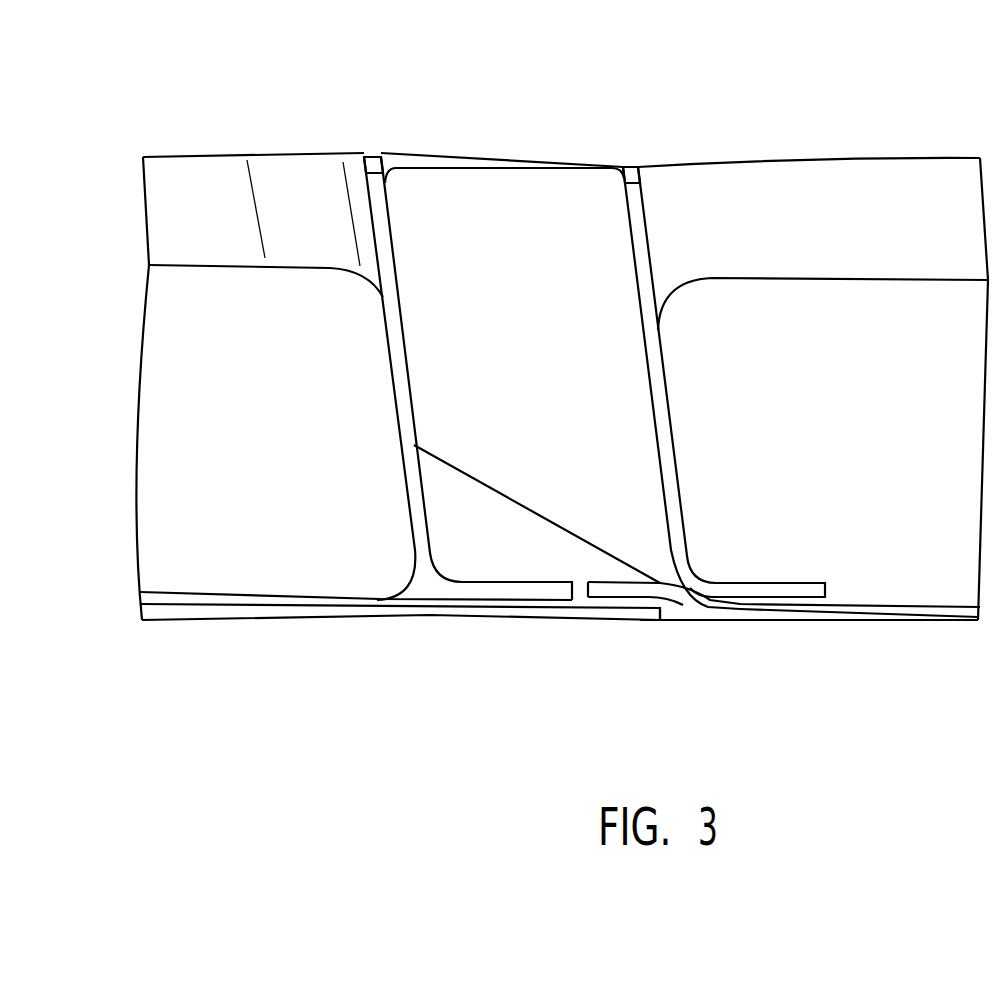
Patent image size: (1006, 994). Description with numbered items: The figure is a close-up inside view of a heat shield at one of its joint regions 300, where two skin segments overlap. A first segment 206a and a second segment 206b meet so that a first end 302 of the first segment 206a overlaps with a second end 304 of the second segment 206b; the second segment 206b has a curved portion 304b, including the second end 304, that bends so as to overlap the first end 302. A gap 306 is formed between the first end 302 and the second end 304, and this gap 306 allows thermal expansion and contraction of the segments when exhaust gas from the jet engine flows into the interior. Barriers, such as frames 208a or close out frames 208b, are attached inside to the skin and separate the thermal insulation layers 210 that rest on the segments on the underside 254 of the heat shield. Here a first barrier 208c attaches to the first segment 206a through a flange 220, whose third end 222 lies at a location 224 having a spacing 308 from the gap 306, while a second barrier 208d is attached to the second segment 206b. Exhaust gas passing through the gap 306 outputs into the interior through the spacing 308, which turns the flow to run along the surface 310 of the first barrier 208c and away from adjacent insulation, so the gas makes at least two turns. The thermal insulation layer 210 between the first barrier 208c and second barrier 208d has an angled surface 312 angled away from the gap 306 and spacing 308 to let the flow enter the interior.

The joint region 300 is at (412, 97).
The thermal insulation layers 210 is at (562, 386).
The frames 208a is at (418, 388).
The close out frames 208b is at (693, 400).
The first barrier 208c is at (350, 166).
The second barrier 208d is at (655, 183).
The first segment 206a is at (404, 613).
The second segment 206b is at (800, 610).
The flange 220 is at (750, 582).
The third end 222 is at (400, 647).
The location 224 is at (560, 616).
The underside 254 is at (297, 655).
The first end 302 is at (645, 634).
The second end 304 is at (775, 563).
The curved portion 304b is at (600, 572).
The gap 306 is at (686, 625).
The spacing 308 is at (568, 568).
The surface 310 is at (700, 452).
The angled surface 312 is at (537, 514).